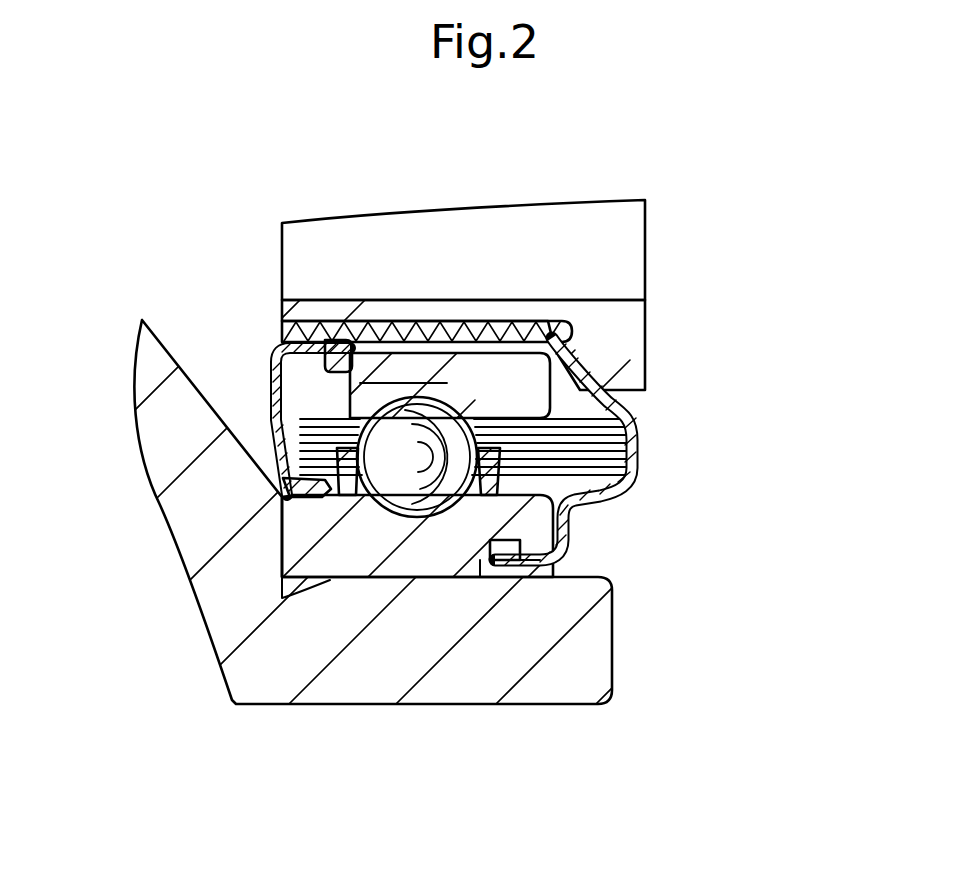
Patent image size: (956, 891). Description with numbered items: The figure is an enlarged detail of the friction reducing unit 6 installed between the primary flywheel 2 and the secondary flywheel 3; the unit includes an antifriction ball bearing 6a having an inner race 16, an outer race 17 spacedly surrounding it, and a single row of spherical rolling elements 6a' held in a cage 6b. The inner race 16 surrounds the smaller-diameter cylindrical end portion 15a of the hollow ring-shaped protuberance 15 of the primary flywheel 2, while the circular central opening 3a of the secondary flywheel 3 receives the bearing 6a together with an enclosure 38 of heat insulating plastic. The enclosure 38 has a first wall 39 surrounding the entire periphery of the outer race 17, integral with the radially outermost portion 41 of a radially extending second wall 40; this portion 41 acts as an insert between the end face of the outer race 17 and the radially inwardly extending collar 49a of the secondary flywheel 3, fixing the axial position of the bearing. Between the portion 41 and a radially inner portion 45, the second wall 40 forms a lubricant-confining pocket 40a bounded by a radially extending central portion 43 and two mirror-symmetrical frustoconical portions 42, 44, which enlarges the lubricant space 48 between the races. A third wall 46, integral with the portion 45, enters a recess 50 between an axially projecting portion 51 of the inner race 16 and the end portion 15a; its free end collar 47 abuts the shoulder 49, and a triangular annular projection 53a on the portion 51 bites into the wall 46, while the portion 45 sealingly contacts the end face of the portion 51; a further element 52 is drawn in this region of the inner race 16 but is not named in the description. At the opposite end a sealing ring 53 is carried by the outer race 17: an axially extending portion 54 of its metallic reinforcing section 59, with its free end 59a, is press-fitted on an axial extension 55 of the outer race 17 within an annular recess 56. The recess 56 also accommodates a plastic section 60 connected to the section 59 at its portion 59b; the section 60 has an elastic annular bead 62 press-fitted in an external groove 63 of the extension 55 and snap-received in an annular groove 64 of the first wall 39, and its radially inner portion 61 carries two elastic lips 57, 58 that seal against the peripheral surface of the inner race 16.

The primary flywheel 2 is at (158, 432).
The secondary flywheel 3 is at (627, 217).
The circular central opening 3a is at (438, 321).
The friction reducing unit 6 is at (182, 777).
The antifriction ball bearing 6a is at (408, 578).
The spherical rolling elements 6a' is at (417, 573).
The cage 6b is at (423, 520).
The ring-shaped protuberance 15 is at (192, 528).
The cylindrical end portion 15a is at (590, 683).
The inner race 16 is at (370, 567).
The outer race 17 is at (513, 380).
The enclosure 38 is at (427, 332).
The first wall 39 is at (395, 320).
The second wall 40 is at (645, 425).
The lubricant-confining pocket 40a is at (645, 445).
The radially outermost portion 41 is at (573, 362).
The frustoconical portion 42 is at (627, 392).
The radially extending central portion 43 is at (630, 452).
The frustoconical portion 44 is at (593, 498).
The radially inner portion 45 is at (573, 530).
The third wall 46 is at (548, 578).
The free end collar 47 is at (488, 575).
The internal space 48 is at (600, 470).
The radially extending shoulder 49 is at (472, 560).
The radially inwardly extending collar 49a is at (617, 377).
The recess 50 is at (520, 568).
The axially projecting portion 51 is at (533, 517).
The seal ring 52 is at (570, 545).
The sealing ring 53 is at (273, 378).
The triangular annular projection 53a is at (568, 550).
The axially extending portion 54 is at (285, 336).
The axial extension 55 is at (283, 470).
The annular recess 56 is at (275, 343).
The elastic lip 57 is at (230, 547).
The elastic lip 58 is at (210, 625).
The metallic reinforcing section 59 is at (273, 393).
The free end 59a is at (313, 340).
The connected portion 59b is at (268, 418).
The plastic section 60 is at (280, 334).
The radially inner portion 61 is at (280, 482).
The elastic annular bead 62 is at (322, 344).
The external groove 63 is at (456, 397).
The annular groove 64 is at (318, 353).